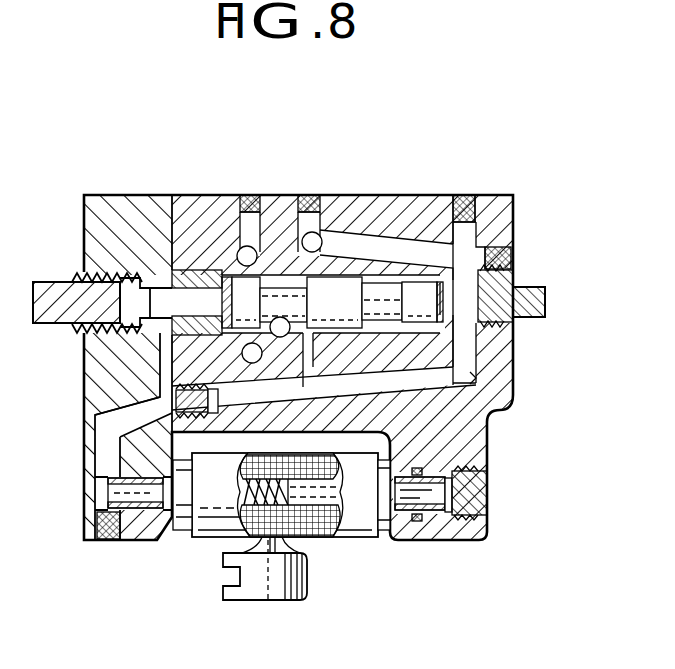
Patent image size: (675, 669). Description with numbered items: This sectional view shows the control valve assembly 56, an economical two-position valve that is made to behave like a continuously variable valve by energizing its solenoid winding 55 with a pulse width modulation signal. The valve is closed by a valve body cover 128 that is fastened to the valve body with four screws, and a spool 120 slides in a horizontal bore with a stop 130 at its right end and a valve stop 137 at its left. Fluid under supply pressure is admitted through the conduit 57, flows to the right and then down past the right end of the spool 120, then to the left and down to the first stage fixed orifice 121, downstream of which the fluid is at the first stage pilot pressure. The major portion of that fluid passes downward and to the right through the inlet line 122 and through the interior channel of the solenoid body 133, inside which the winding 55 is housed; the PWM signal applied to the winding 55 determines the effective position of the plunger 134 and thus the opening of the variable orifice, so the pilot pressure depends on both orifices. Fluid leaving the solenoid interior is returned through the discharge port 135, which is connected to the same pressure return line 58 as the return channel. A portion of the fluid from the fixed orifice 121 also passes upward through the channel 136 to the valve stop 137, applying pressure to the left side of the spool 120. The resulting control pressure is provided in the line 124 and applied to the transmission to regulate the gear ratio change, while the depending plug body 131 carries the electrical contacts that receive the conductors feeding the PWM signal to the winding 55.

The valve body cover 128 is at (95, 193).
The return pressure line 58 is at (248, 240).
The conduit 57 is at (313, 236).
The line 124 is at (281, 308).
The stop 130 is at (513, 289).
The spool 120 is at (444, 300).
The valve stop 137 is at (186, 303).
The channel 136 is at (160, 367).
The first stage fixed orifice 121 is at (173, 407).
The inlet line 122 is at (108, 494).
The solenoid body 133 is at (222, 525).
The solenoid winding 55 is at (324, 525).
The plug body 131 is at (263, 585).
The plunger 134 is at (429, 496).
The discharge port 135 is at (488, 494).
The control valve assembly 56 is at (172, 617).